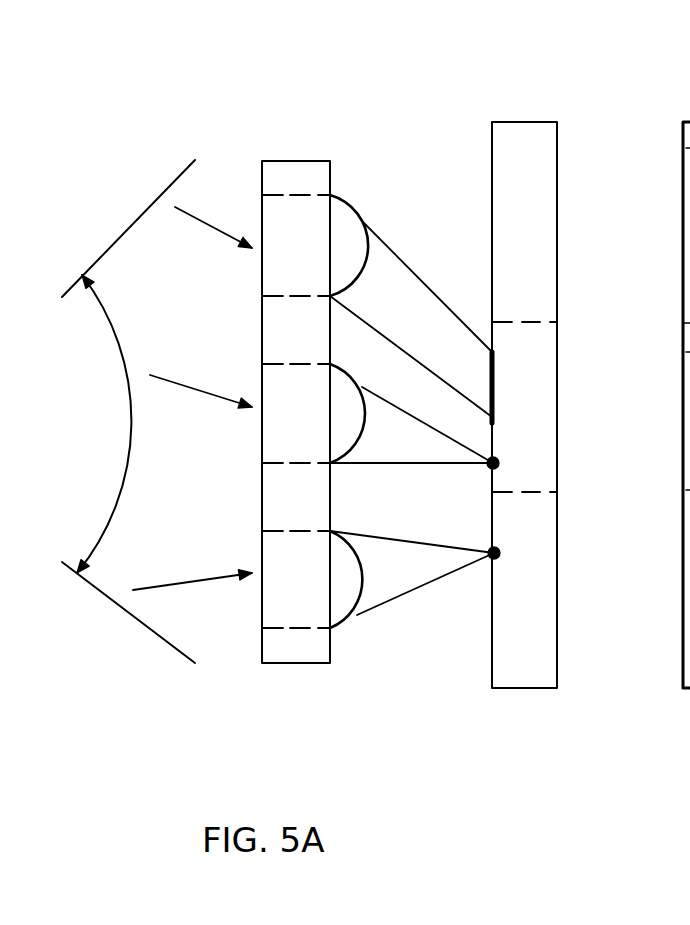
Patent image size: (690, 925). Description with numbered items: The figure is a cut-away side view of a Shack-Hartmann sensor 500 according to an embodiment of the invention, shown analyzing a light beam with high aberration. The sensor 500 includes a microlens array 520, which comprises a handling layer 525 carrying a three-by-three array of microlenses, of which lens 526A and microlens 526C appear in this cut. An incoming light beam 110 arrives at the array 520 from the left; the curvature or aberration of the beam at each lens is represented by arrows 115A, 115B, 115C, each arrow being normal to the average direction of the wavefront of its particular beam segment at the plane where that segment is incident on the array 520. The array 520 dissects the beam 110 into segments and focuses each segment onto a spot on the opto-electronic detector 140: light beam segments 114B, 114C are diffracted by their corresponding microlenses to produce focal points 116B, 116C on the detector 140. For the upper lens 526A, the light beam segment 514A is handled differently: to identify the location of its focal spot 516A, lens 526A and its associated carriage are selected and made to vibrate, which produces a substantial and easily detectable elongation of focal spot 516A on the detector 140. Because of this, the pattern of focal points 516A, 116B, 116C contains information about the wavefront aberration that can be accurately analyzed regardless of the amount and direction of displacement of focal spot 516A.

The SH sensor 500 is at (628, 70).
The microlens array 520 is at (228, 113).
The handling layer 525 is at (314, 161).
The lens 526A is at (366, 222).
The microlens 526C is at (360, 615).
The arrow 115A is at (204, 223).
The arrow 115B is at (180, 384).
The arrow 115C is at (160, 590).
The incoming light beam 110 is at (131, 437).
The light beam segment 514A is at (425, 283).
The light beam segment 114B is at (423, 465).
The light beam segment 114C is at (422, 590).
The opto-electronic detector 140 is at (531, 690).
The focal spot 516A is at (493, 352).
The focal point 116B is at (494, 463).
The focal point 116C is at (494, 553).